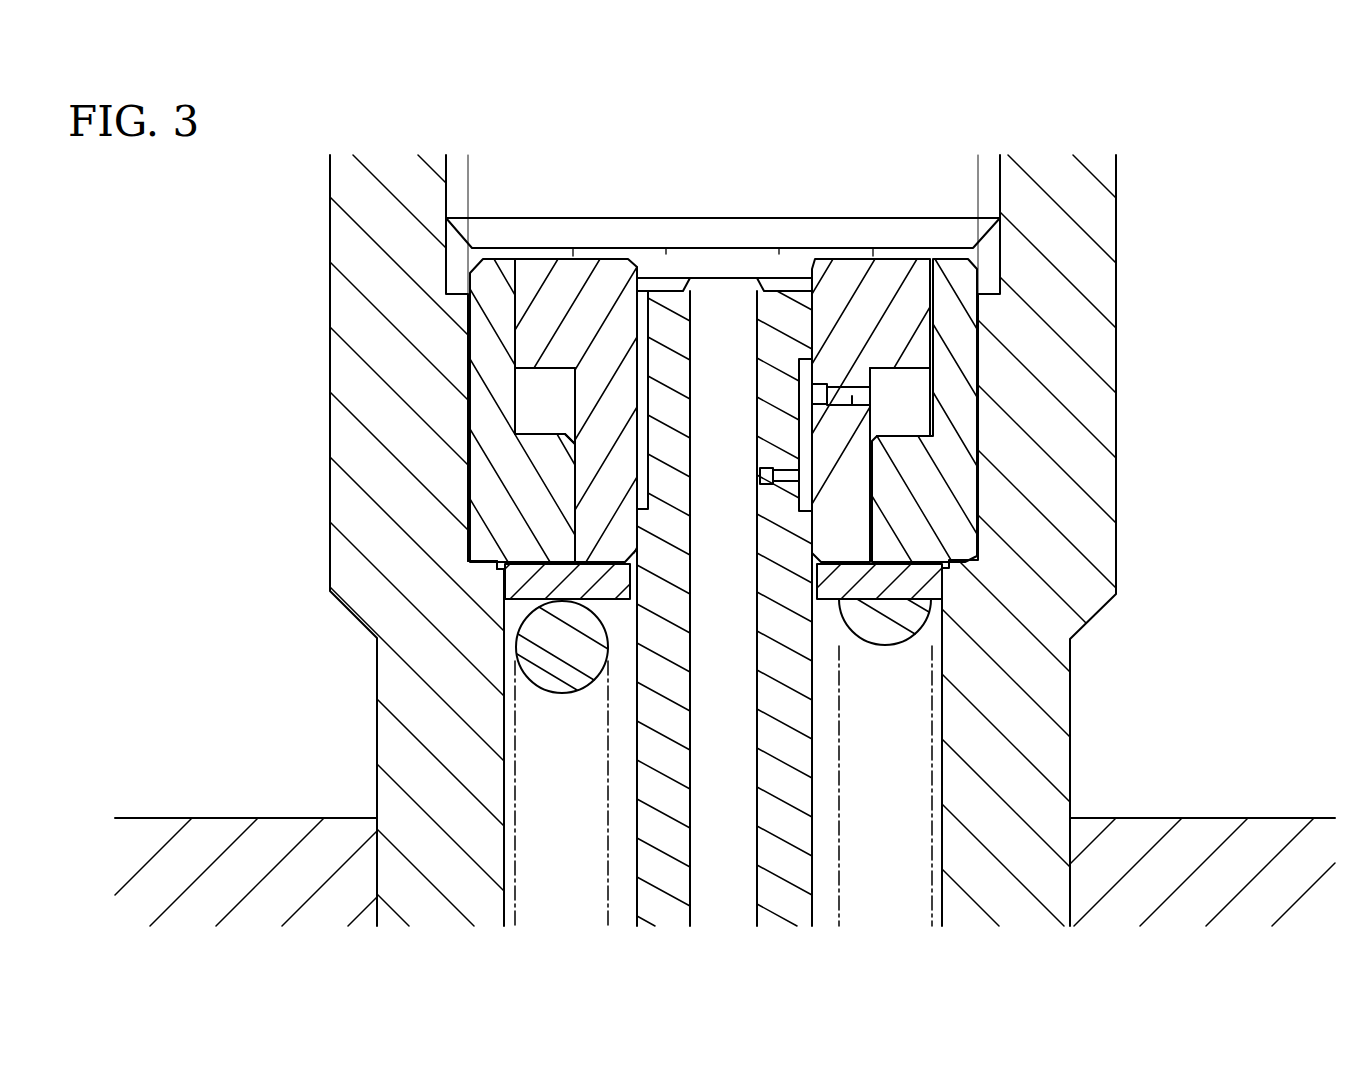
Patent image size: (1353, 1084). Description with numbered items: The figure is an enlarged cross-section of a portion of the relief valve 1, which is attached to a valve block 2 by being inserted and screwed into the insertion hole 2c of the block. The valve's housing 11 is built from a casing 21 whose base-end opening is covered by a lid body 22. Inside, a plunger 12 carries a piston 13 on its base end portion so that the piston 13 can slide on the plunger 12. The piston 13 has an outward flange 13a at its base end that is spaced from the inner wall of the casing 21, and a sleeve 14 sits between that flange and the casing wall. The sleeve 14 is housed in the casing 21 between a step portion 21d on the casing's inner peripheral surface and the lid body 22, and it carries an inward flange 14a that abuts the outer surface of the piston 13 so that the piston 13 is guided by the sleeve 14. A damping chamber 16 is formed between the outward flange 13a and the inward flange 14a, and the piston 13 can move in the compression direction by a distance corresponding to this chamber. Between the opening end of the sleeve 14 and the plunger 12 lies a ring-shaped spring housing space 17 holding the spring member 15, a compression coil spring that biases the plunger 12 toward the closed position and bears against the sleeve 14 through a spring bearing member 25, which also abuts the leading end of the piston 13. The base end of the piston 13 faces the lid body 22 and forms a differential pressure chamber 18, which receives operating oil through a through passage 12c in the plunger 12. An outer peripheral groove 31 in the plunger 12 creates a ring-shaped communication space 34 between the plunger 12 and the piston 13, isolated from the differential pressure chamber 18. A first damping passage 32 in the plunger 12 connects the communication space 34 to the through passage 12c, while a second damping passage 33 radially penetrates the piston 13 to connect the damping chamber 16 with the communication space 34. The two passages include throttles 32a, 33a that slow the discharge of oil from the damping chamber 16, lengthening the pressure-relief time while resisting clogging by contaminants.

The relief valve 1 is at (1284, 188).
The valve block 2 is at (275, 830).
The insertion hole 2c is at (1050, 880).
The housing 11 is at (815, 501).
The plunger 12 is at (650, 790).
The through passage 12c is at (780, 790).
The piston 13 is at (612, 262).
The outward flange 13a is at (520, 335).
The sleeve 14 is at (495, 283).
The inward flange 14a is at (540, 495).
The spring member 15 is at (548, 680).
The damping chamber 16 is at (905, 428).
The spring housing space 17 is at (535, 838).
The differential pressure chamber 18 is at (750, 247).
The casing 21 is at (1100, 540).
The step portion 21d is at (480, 556).
The lid body 22 is at (500, 167).
The spring bearing member 25 is at (516, 585).
The outer peripheral groove 31 is at (812, 495).
The first damping passage 32 is at (762, 470).
The throttle 32a is at (768, 484).
The second damping passage 33 is at (850, 406).
The throttle 33a is at (820, 382).
The communication space 34 is at (795, 357).